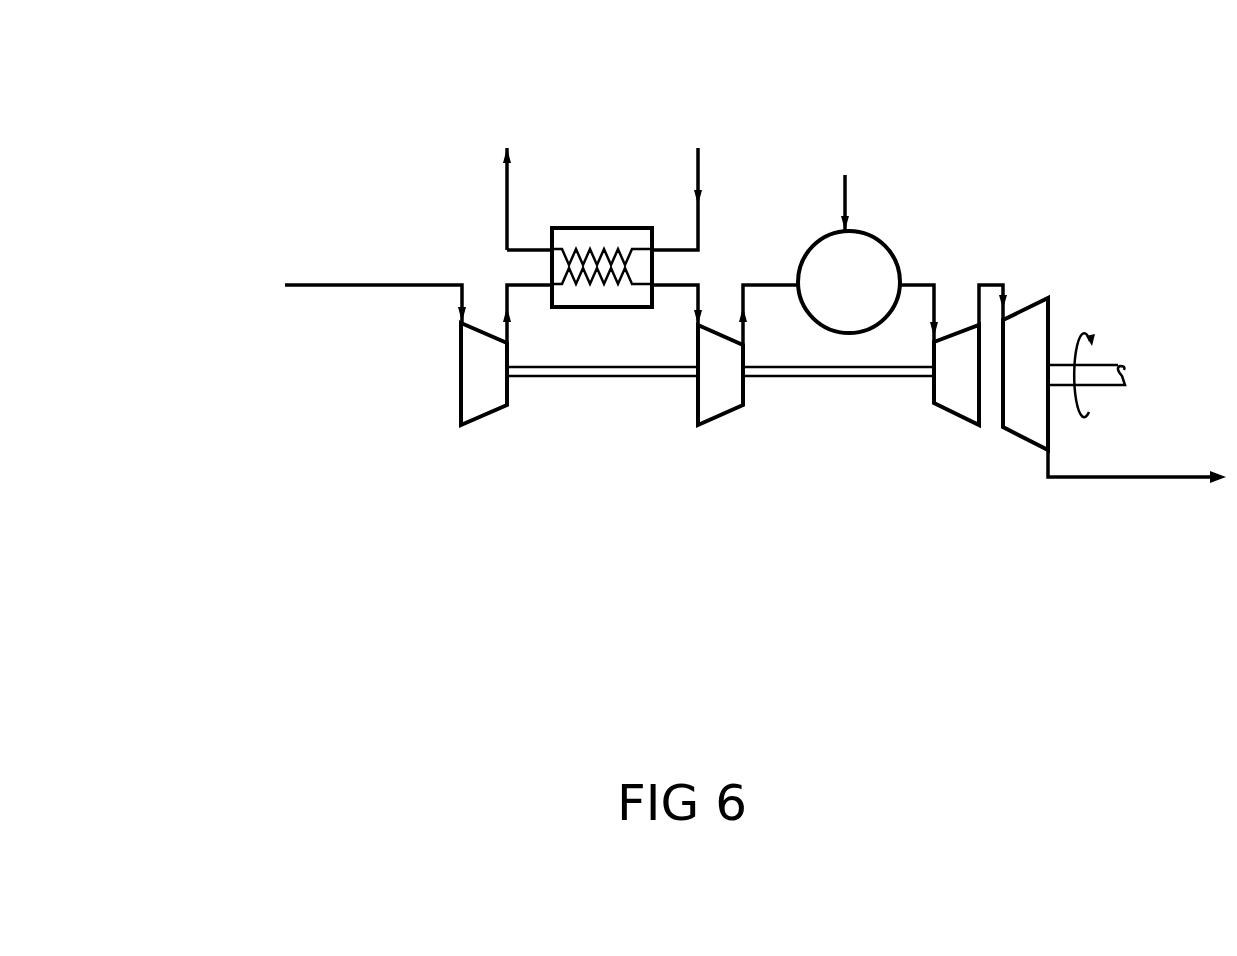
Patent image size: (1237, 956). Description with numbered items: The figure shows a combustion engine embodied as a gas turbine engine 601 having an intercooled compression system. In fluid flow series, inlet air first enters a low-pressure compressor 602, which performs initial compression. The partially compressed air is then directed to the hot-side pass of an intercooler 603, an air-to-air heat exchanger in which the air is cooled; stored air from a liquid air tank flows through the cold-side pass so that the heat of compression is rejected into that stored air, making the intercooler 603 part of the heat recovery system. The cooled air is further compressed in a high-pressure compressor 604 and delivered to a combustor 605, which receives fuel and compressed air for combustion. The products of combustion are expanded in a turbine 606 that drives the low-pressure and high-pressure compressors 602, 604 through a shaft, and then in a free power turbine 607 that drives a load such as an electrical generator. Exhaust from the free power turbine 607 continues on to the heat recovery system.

The gas turbine engine 601 is at (285, 88).
The low-pressure compressor 602 is at (507, 395).
The intercooler 603 is at (622, 228).
The high-pressure compressor 604 is at (743, 397).
The combustor 605 is at (868, 232).
The turbine 606 is at (934, 400).
The free power turbine 607 is at (1000, 428).